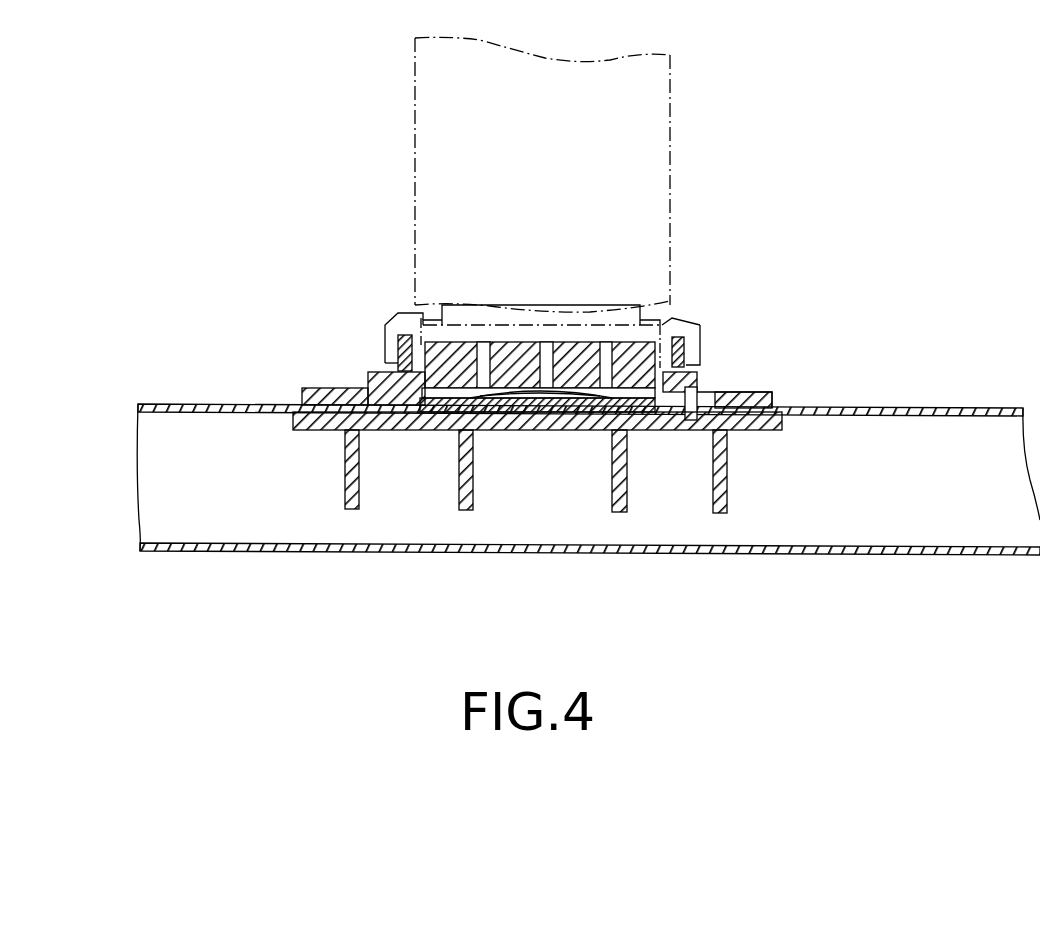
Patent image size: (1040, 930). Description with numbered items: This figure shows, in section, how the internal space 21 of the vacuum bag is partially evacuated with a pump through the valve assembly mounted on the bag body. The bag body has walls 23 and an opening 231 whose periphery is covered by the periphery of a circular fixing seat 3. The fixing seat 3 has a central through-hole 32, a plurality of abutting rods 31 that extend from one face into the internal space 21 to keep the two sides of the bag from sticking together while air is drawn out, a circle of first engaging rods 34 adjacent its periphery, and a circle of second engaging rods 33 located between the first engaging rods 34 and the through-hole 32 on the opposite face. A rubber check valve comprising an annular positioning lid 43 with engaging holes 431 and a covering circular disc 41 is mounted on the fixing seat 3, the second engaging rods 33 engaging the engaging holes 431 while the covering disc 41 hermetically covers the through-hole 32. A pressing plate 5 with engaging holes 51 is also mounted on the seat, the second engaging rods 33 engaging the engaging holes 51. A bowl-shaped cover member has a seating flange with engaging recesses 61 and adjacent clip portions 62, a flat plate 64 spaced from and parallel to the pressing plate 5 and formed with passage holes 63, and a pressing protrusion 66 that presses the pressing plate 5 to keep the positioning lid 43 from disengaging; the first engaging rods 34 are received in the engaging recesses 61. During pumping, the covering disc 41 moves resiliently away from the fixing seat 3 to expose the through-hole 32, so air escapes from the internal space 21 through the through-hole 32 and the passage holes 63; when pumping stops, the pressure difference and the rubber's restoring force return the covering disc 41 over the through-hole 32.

The fixing seat 3 is at (637, 455).
The pressing plate 5 is at (700, 340).
The internal space 21 is at (940, 445).
The pipe wall 23 is at (880, 405).
The abutting rods 31 is at (727, 489).
The central through-hole 32 is at (536, 430).
The second engaging rods 33 is at (632, 415).
The first engaging rods 34 is at (712, 400).
The covering circular disc 41 is at (513, 342).
The annular positioning lid 43 is at (420, 410).
The engaging holes 51 is at (677, 337).
The engaging recesses 61 is at (372, 385).
The clip 62 is at (410, 335).
The passage holes 63 is at (603, 350).
The flat plate 64 is at (690, 325).
The pressing protrusion 66 is at (678, 400).
The opening 231 is at (752, 394).
The engaging holes 431 is at (428, 432).